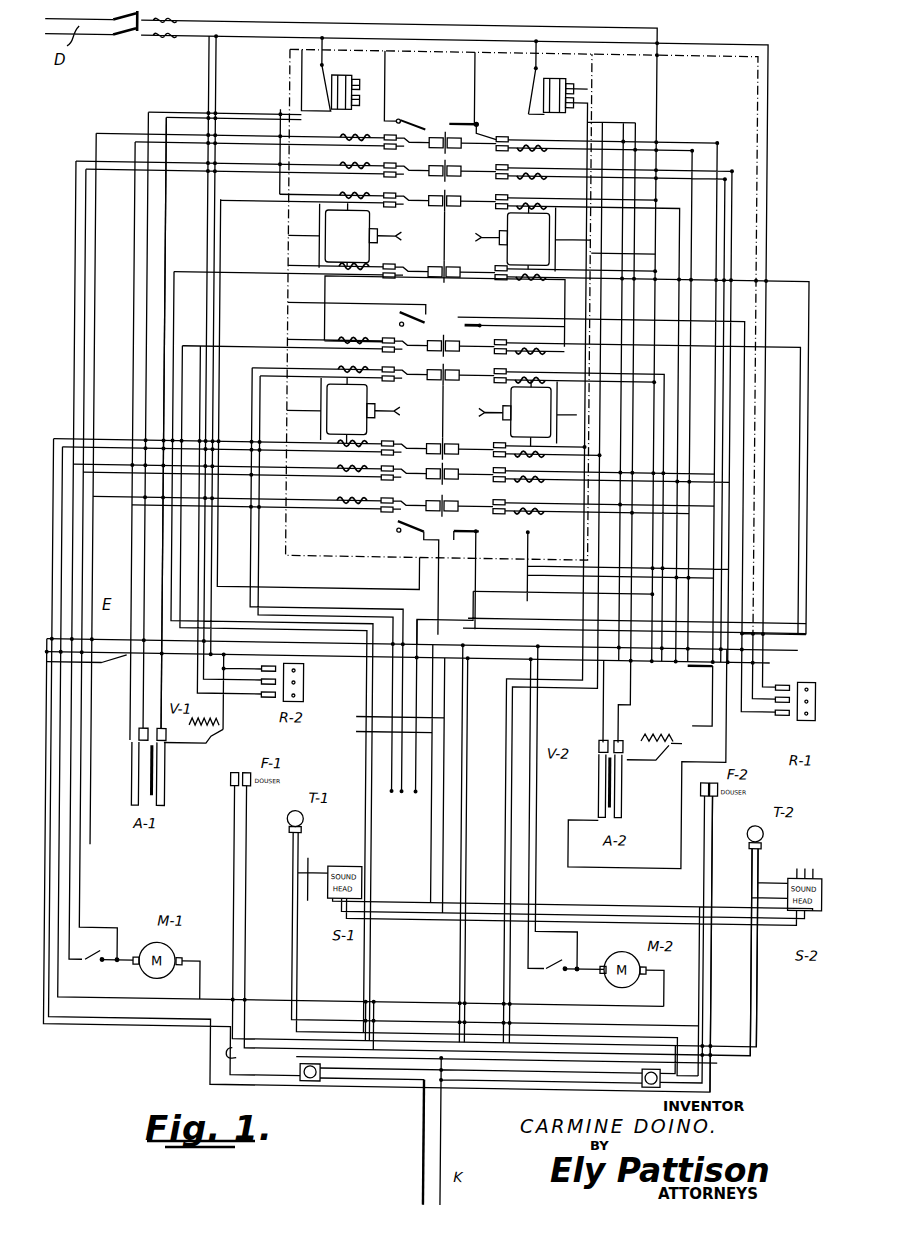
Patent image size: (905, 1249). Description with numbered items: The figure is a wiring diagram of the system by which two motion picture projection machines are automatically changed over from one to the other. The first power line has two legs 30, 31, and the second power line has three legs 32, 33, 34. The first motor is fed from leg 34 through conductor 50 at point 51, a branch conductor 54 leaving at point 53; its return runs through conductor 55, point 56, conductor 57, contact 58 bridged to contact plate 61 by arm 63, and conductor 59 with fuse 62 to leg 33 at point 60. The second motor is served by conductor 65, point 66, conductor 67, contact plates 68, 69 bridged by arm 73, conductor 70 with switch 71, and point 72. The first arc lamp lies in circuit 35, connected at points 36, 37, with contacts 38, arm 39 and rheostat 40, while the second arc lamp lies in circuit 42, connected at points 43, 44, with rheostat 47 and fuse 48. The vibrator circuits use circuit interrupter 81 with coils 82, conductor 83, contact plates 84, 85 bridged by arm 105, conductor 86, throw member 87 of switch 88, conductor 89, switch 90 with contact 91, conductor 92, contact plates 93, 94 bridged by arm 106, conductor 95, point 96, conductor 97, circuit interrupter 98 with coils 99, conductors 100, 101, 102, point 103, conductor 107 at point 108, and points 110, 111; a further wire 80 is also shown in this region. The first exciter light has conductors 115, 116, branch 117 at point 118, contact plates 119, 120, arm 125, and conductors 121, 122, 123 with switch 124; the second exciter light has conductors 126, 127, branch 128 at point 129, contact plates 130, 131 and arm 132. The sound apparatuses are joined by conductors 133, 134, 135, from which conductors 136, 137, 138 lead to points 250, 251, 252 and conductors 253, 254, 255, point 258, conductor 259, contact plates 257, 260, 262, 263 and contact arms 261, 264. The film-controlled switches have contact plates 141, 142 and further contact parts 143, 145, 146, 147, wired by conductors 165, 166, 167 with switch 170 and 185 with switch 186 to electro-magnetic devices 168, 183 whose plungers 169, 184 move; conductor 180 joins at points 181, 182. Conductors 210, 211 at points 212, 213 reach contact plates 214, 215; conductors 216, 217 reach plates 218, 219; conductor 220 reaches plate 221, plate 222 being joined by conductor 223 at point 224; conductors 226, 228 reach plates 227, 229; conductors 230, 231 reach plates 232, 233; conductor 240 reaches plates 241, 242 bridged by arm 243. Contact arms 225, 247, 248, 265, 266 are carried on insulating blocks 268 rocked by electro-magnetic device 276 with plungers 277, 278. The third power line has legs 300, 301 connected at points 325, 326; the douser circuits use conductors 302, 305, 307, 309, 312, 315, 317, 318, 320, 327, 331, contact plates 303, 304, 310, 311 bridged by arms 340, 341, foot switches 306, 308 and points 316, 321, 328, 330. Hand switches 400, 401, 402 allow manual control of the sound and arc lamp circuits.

The leg 30 is at (195, 38).
The leg 31 is at (248, 26).
The leg 32 is at (435, 629).
The leg 33 is at (343, 667).
The leg 34 is at (93, 689).
The circuit 35 is at (178, 532).
The connection point 36 is at (240, 661).
The connection point 37 is at (110, 674).
The spaced contacts 38 is at (373, 117).
The arm 39 is at (438, 117).
The control rheostat 40 is at (199, 736).
The circuit 42 is at (650, 653).
The connection point 43 is at (688, 672).
The connection point 44 is at (652, 674).
The rheostat 47 is at (655, 774).
The fuse 48 is at (553, 159).
The conductor 50 is at (244, 994).
The connection point 51 is at (90, 704).
The branch point 53 is at (178, 982).
The conductor 54 is at (213, 937).
The conductor 55 is at (135, 932).
The branch point 56 is at (120, 982).
The conductor 57 is at (101, 886).
The contact 58 is at (408, 182).
The conductor 59 is at (78, 575).
The connection point 60 is at (60, 616).
The contact plate 61 is at (353, 154).
The fuse 62 is at (328, 154).
The arm / manually operated switch 63 is at (247, 563).
The conductor 65 is at (573, 937).
The connection point 66 is at (596, 989).
The conductor 67 is at (618, 488).
The contact plate 68 is at (528, 186).
The contact plate 69 is at (516, 154).
The conductor 70 is at (641, 553).
The manually operated switch 71 is at (554, 987).
The connection point 72 is at (498, 671).
The arm 73 is at (468, 151).
The conductor 80 is at (193, 399).
The circuit interrupter 81 is at (332, 70).
The coils 82 is at (364, 85).
The conductor 83 is at (253, 156).
The contact plate 84 is at (356, 182).
The contact plate 85 is at (387, 212).
The conductor 86 is at (285, 397).
The throw member 87 is at (378, 526).
The switch 88 is at (377, 547).
The conductor 89 is at (405, 547).
The switch 90 is at (460, 547).
The contact 91 is at (490, 544).
The conductor 92 is at (600, 415).
The contact plate 93 is at (483, 219).
The contact plate 94 is at (500, 184).
The conductor 95 is at (566, 184).
The connection point 96 is at (611, 112).
The conductor 97 is at (522, 98).
The circuit interrupter 98 is at (569, 553).
The coils 99 is at (600, 96).
The conductor 100 is at (644, 403).
The conductor 101 is at (584, 486).
The conductor 102 is at (177, 422).
The connection point 103 is at (247, 127).
The arm 105 is at (418, 216).
The arm 106 is at (455, 224).
The conductor 107 is at (558, 404).
The connection point 108 is at (695, 37).
The connection point 110 is at (352, 32).
The connection point 111 is at (567, 32).
The conductor 115 is at (259, 648).
The conductor 116 is at (261, 615).
The branch conductor 117 is at (331, 294).
The connection point 118 is at (320, 361).
The contact plate 119 is at (385, 294).
The contact plate 120 is at (403, 264).
The conductor 121 is at (307, 914).
The conductor 122 is at (345, 847).
The conductor 123 is at (313, 847).
The switch 124 is at (310, 934).
The arm 125 is at (410, 292).
The conductor 126 is at (763, 552).
The conductor 127 is at (784, 612).
The branch conductor 128 is at (535, 304).
The connection point 129 is at (570, 359).
The contact plate 130 is at (500, 294).
The contact plate 131 is at (480, 261).
The arm 132 is at (460, 294).
The conductor 133 is at (398, 879).
The conductor 134 is at (390, 937).
The conductor 135 is at (428, 947).
The conductor 136 is at (480, 802).
The conductor 137 is at (404, 857).
The conductor 138 is at (403, 837).
The contact plate 141 is at (521, 393).
The contact plate 142 is at (496, 717).
The relay contact 143 is at (758, 732).
The relay contact 145 is at (650, 381).
The relay contact 146 is at (652, 382).
The relay armature 147 is at (806, 731).
The conductor 165 is at (240, 189).
The conductor 166 is at (795, 182).
The conductor 167 is at (191, 212).
The electro-magnetic device 168 is at (345, 235).
The plunger 169 is at (400, 244).
The switch 170 is at (405, 118).
The conductor 180 is at (433, 237).
The connection point 181 is at (665, 264).
The connection point 182 is at (527, 243).
The electro-magnetic device 183 is at (533, 238).
The plunger 184 is at (472, 239).
The conductor 185 is at (653, 150).
The switch 186 is at (460, 122).
The conductor 210 is at (115, 457).
The conductor 211 is at (315, 482).
The connection point 212 is at (58, 421).
The connection point 213 is at (113, 481).
The contact plate 214 is at (385, 459).
The contact plate 215 is at (345, 435).
The conductor 216 is at (339, 453).
The conductor 217 is at (236, 531).
The contact plate 218 is at (358, 487).
The contact plate 219 is at (350, 526).
The conductor 220 is at (335, 361).
The contact plate 221 is at (395, 357).
The contact plate 222 is at (345, 327).
The conductor 223 is at (267, 289).
The connection point 224 is at (304, 247).
The contact arm 225 is at (400, 332).
The conductor 226 is at (552, 457).
The contact plate 227 is at (516, 452).
The conductor 228 is at (565, 486).
The contact plate 229 is at (522, 486).
The conductor 230 is at (445, 484).
The conductor 231 is at (565, 531).
The contact plate 232 is at (515, 521).
The contact plate 233 is at (475, 484).
The conductor 240 is at (605, 297).
The contact plate 241 is at (515, 324).
The contact plate 242 is at (530, 357).
The contact arm 243 is at (445, 332).
The contact arm 247 is at (421, 459).
The contact arm 248 is at (445, 459).
The connection point 250 is at (338, 712).
The connection point 251 is at (338, 737).
The connection point 252 is at (437, 714).
The conductor 253 is at (336, 511).
The conductor 254 is at (421, 548).
The conductor 255 is at (439, 653).
The contact plate 257 is at (366, 357).
The connection point 258 is at (445, 404).
The conductor 259 is at (465, 414).
The contact plate 260 is at (405, 399).
The contact arm 261 is at (425, 357).
The contact plate 262 is at (490, 357).
The contact plate 263 is at (490, 397).
The contact arm 264 is at (460, 357).
The contact arm 265 is at (412, 484).
The contact arm 266 is at (470, 519).
The blocks of insulating material 268 is at (440, 524).
The electro-magnetic device 276 is at (565, 419).
The plunger 277 is at (301, 389).
The plunger 278 is at (565, 435).
The leg 300 is at (428, 1143).
The leg 301 is at (446, 1136).
The conductor 302 is at (218, 799).
The contact plate 303 is at (350, 459).
The contact plate 304 is at (375, 419).
The conductor 305 is at (117, 733).
The foot switch 306 is at (314, 1083).
The conductor 307 is at (488, 1096).
The foot switch 308 is at (646, 1064).
The conductor 309 is at (645, 1019).
The contact plate 310 is at (478, 461).
The contact plate 311 is at (480, 432).
The conductor 312 is at (561, 574).
The conductor 315 is at (265, 854).
The connection point 316 is at (265, 1009).
The conductor 317 is at (373, 1061).
The conductor 318 is at (740, 1081).
The conductor 320 is at (723, 987).
The connection point 321 is at (178, 1012).
The connection point 325 is at (390, 1101).
The connection point 326 is at (425, 1042).
The conductor 327 is at (516, 1061).
The connection point 328 is at (268, 1042).
The connection point 330 is at (760, 1054).
The conductor 331 is at (728, 947).
The contact arm 340 is at (418, 427).
The contact arm 341 is at (450, 432).
The switch 400 is at (405, 819).
The switch 401 is at (110, 627).
The switch 402 is at (725, 609).